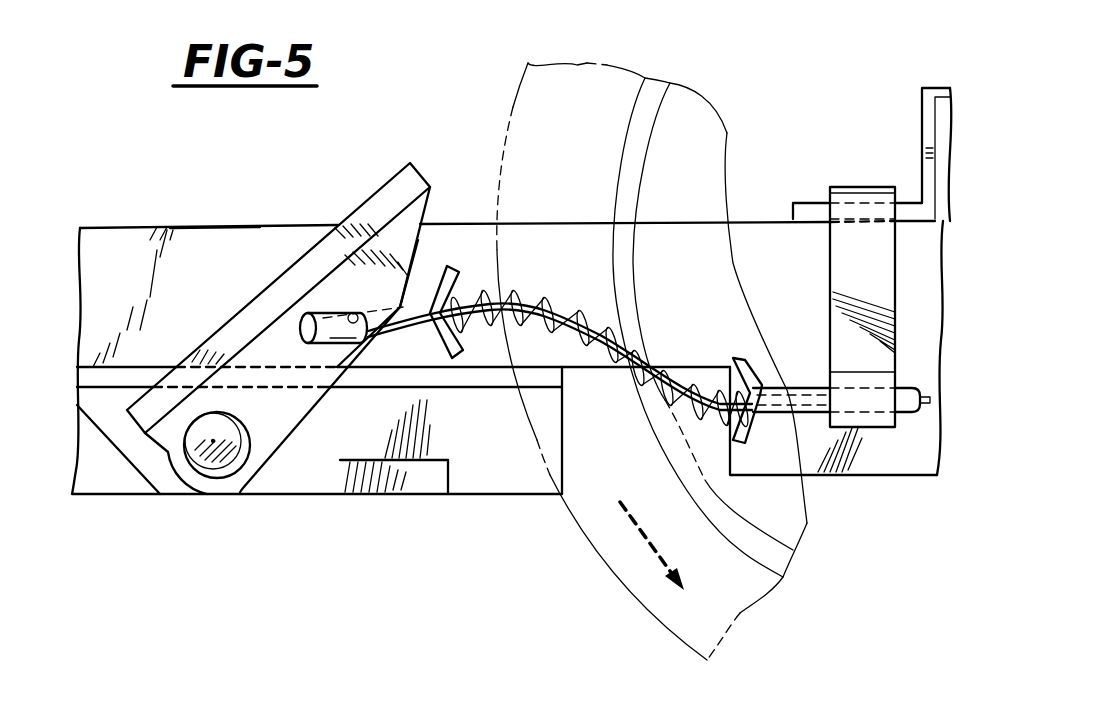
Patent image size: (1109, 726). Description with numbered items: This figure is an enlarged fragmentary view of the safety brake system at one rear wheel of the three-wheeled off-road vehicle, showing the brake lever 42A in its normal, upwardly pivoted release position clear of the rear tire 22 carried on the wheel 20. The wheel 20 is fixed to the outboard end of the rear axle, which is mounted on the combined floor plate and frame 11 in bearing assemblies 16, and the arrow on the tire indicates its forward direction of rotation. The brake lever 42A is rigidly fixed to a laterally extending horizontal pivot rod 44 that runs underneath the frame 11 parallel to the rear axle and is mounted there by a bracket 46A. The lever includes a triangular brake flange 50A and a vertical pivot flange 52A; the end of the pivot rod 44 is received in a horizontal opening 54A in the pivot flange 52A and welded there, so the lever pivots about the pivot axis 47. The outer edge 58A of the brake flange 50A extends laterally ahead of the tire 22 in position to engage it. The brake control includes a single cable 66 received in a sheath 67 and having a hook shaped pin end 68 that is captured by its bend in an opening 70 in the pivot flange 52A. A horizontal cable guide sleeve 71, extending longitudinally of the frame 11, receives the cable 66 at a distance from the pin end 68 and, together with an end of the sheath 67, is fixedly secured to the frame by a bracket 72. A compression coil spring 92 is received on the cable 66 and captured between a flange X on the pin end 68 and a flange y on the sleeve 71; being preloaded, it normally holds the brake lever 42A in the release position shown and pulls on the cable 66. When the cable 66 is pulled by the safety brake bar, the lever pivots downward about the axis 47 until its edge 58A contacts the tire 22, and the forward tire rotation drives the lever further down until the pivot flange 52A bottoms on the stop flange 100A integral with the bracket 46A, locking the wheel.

The combined floor plate and frame 11 is at (182, 226).
The bearing assemblies 16 is at (933, 88).
The wheel 20 is at (623, 133).
The tire 22 is at (512, 107).
The brake lever 42A is at (373, 186).
The pivot rod 44 is at (213, 470).
The bracket 46A is at (117, 472).
The pivot axis 47 is at (228, 464).
The brake flange 50A is at (290, 267).
The vertical pivot flange 52A is at (170, 456).
The horizontal opening 54A is at (247, 452).
The edge 58A is at (422, 170).
The cable 66 is at (565, 305).
The sheath 67 is at (920, 407).
The hook shaped pin end 68 is at (340, 313).
The opening 70 is at (352, 313).
The cable guide sleeve 71 is at (830, 427).
The bracket 72 is at (833, 250).
The compression coil spring 92 is at (607, 318).
The stop flange 100A is at (420, 485).
The flange X is at (447, 266).
The flange y is at (740, 367).